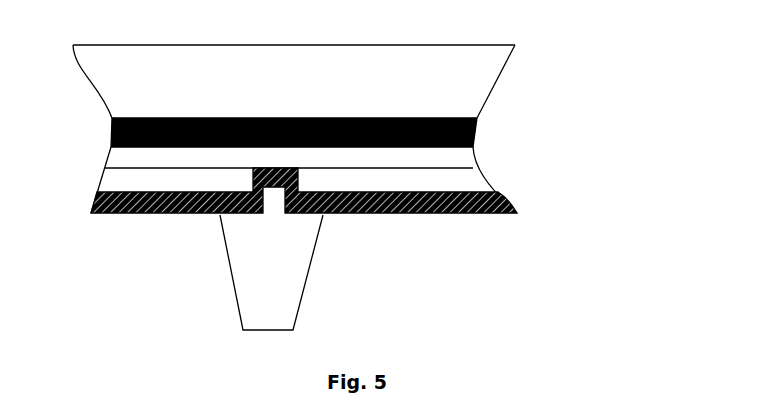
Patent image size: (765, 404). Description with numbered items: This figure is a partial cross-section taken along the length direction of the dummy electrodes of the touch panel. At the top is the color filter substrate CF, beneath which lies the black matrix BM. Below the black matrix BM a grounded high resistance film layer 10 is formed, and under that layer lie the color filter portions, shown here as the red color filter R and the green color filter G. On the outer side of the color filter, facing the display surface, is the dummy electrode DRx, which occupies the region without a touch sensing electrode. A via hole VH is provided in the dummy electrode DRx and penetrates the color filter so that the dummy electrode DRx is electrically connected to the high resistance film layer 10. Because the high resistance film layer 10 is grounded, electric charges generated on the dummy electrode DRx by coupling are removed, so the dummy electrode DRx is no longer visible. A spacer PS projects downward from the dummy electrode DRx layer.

The color filter substrate CF is at (294, 81).
The black matrix BM is at (474, 137).
The high resistance film layer 10 is at (460, 159).
The color filter R is at (179, 180).
The color filter G is at (385, 180).
The dummy electrode DRx is at (519, 205).
The via hole VH is at (298, 180).
The spacer PS is at (271, 272).